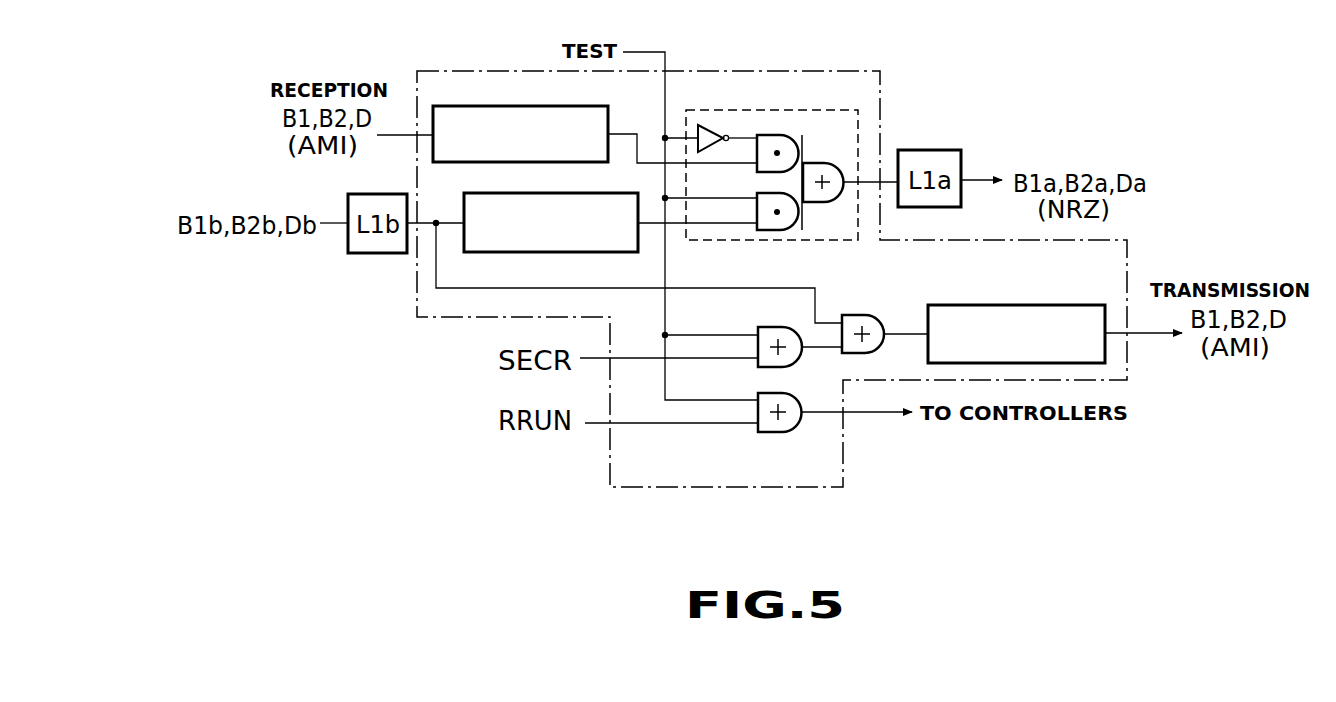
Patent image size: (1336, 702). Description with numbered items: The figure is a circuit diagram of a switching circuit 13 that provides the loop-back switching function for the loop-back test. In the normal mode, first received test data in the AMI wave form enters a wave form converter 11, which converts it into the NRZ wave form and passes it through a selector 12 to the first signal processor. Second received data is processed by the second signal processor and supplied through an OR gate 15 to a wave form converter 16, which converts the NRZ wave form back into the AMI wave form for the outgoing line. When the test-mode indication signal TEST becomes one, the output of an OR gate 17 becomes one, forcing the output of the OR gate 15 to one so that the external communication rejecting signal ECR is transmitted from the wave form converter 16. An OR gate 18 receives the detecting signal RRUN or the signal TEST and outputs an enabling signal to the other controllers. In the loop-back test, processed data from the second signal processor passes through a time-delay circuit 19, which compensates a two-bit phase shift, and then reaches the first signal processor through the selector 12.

The wave form converter 11 is at (585, 106).
The selector 12 is at (760, 110).
The switching circuit 13 is at (782, 68).
The OR gate 15 is at (855, 315).
The wave form converter 16 is at (1043, 305).
The OR gate 17 is at (772, 327).
The OR gate 18 is at (788, 432).
The time-delay circuit 19 is at (595, 252).